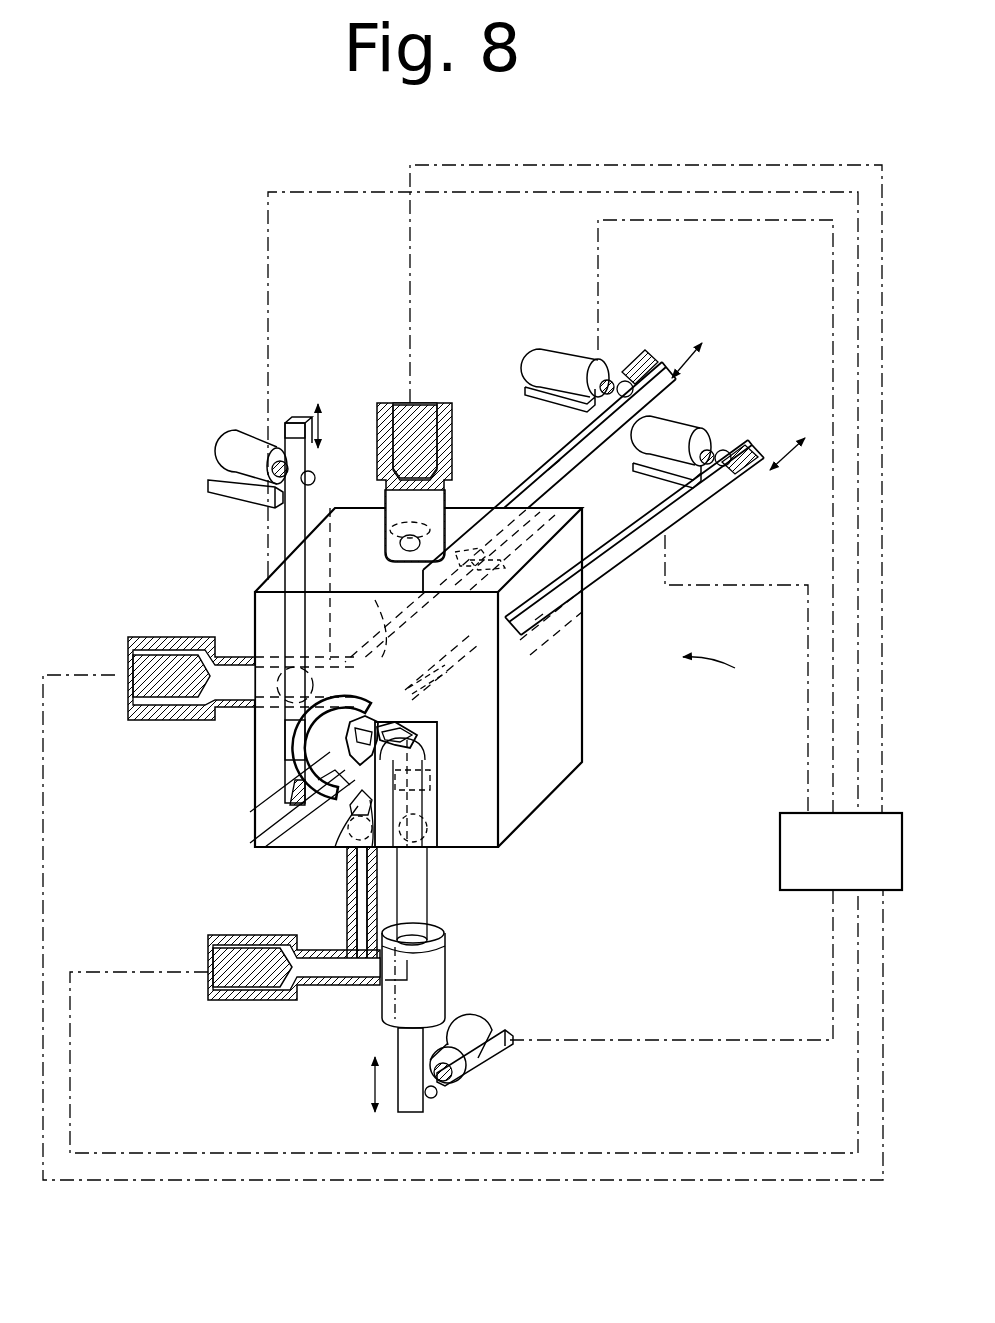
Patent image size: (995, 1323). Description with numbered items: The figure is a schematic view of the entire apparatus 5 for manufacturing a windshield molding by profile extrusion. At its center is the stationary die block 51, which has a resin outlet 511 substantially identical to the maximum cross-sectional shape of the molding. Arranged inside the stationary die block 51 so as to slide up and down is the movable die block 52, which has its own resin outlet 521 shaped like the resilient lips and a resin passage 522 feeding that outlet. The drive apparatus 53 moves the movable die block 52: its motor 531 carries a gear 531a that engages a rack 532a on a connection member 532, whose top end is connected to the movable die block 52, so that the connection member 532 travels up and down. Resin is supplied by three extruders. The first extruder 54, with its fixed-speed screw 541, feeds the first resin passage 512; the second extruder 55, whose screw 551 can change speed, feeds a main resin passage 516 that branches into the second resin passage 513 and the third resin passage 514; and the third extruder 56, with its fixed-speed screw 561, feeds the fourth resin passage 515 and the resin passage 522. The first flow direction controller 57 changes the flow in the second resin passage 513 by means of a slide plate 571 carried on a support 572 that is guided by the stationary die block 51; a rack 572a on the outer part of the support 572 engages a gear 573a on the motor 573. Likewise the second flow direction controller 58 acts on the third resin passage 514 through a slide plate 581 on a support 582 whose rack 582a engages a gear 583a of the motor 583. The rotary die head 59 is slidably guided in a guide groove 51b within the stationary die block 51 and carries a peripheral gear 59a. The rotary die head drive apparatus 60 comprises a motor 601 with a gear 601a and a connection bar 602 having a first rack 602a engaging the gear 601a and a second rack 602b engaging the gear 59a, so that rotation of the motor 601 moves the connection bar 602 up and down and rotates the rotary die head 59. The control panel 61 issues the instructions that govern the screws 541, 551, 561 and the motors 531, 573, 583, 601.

The apparatus 5 is at (719, 680).
The stationary die block 51 is at (548, 655).
The guide groove 51b is at (350, 805).
The movable die block 52 is at (440, 850).
The drive apparatus 53 is at (450, 990).
The first extruder 54 is at (130, 640).
The second extruder 55 is at (455, 400).
The third extruder 56 is at (210, 940).
The first flow direction controller 57 is at (535, 620).
The second flow direction controller 58 is at (548, 470).
The rotary die head 59 is at (300, 745).
The gear 59a is at (325, 780).
The rotary die head drive apparatus 60 is at (270, 575).
The control panel 61 is at (797, 890).
The resin outlet 511 is at (360, 760).
The first resin passage 512 is at (402, 735).
The second resin passage 513 is at (395, 722).
The third resin passage 514 is at (378, 625).
The fourth resin passage 515 is at (350, 855).
The main resin passage 516 is at (478, 553).
The resin outlet 521 is at (415, 785).
The resin passage 522 is at (432, 835).
The motor 531 is at (485, 1020).
The gear 531a is at (452, 1070).
The connection member 532 is at (400, 1040).
The rack 532a is at (432, 1098).
The screw 541 is at (170, 665).
The screw 551 is at (360, 540).
The screw 561 is at (250, 970).
The slide plate 571 is at (420, 690).
The support 572 is at (690, 500).
The rack 572a is at (750, 458).
The motor 573 is at (668, 420).
The gear 573a is at (712, 455).
The slide plate 581 is at (478, 568).
The support 582 is at (583, 428).
The rack 582a is at (640, 360).
The motor 583 is at (568, 358).
The gear 583a is at (628, 386).
The motor 601 is at (228, 442).
The gear 601a is at (276, 458).
The connection bar 602 is at (290, 528).
The first rack 602a is at (296, 420).
The second rack 602b is at (283, 732).